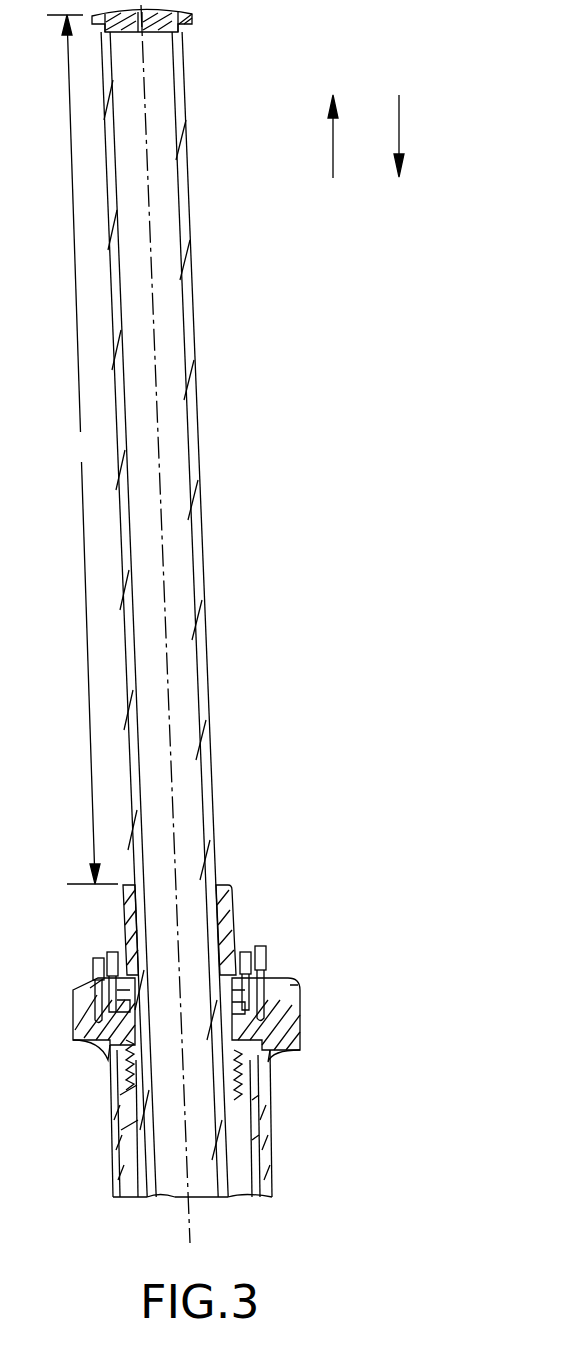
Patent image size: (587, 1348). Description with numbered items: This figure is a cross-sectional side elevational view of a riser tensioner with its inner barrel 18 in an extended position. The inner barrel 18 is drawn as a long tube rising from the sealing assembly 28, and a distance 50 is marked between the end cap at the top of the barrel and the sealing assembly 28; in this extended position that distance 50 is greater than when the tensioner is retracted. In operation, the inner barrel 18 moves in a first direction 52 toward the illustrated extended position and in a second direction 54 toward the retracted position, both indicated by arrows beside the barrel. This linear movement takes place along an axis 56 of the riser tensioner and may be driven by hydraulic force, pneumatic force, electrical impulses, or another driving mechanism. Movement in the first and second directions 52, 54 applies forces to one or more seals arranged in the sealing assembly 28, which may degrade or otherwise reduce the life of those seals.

The inner barrel 18 is at (197, 423).
The sealing assembly 28 is at (267, 930).
The distance 50 is at (82, 449).
The first direction 52 is at (333, 147).
The second direction 54 is at (401, 115).
The axis 56 is at (190, 1218).